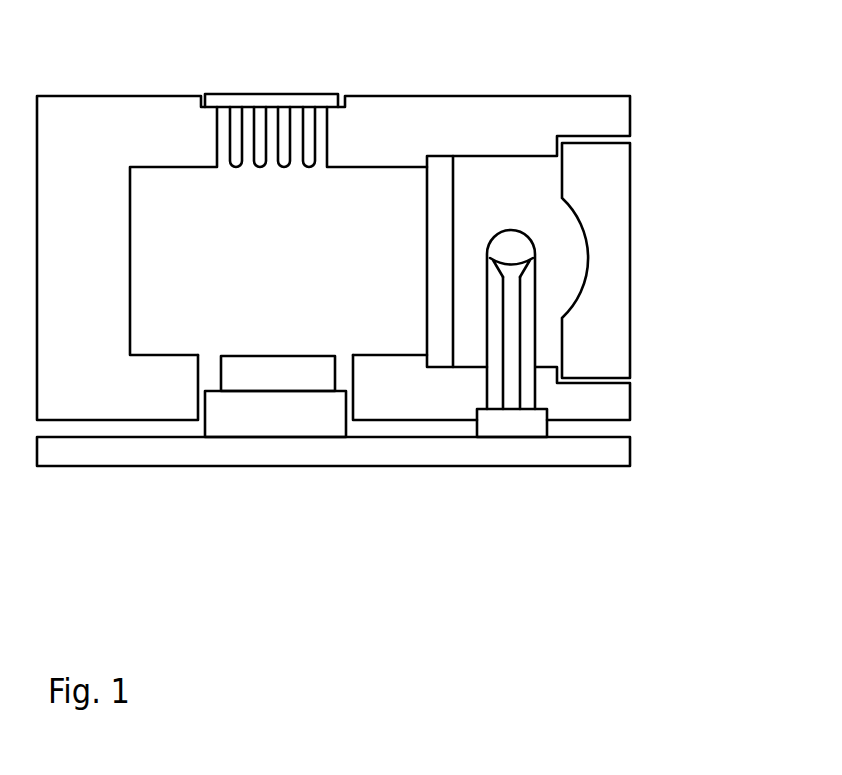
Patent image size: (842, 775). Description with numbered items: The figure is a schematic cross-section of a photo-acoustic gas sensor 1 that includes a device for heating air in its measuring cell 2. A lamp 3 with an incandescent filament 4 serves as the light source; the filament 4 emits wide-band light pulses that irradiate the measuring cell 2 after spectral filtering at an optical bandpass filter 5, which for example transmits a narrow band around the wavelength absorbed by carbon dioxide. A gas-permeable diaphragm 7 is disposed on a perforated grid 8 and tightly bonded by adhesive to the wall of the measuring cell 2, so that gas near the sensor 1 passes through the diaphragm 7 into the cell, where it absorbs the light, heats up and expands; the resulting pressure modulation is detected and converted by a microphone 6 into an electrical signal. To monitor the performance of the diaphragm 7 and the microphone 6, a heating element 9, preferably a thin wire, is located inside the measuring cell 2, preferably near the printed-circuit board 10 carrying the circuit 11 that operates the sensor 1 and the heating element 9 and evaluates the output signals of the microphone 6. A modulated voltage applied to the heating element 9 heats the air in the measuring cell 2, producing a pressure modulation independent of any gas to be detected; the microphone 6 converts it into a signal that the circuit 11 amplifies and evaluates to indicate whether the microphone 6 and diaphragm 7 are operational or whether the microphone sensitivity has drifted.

The photo-acoustic gas sensor 1 is at (512, 97).
The measuring cell 2 is at (263, 237).
The lamp 3 is at (537, 290).
The incandescent filament 4 is at (496, 262).
The optical bandpass filter 5 is at (442, 302).
The microphone 6 is at (264, 372).
The gas-permeable diaphragm 7 is at (270, 95).
The perforated grid 8 is at (308, 138).
The heating element 9 is at (312, 412).
The printed-circuit board 10 is at (333, 501).
The circuit 11 is at (145, 450).